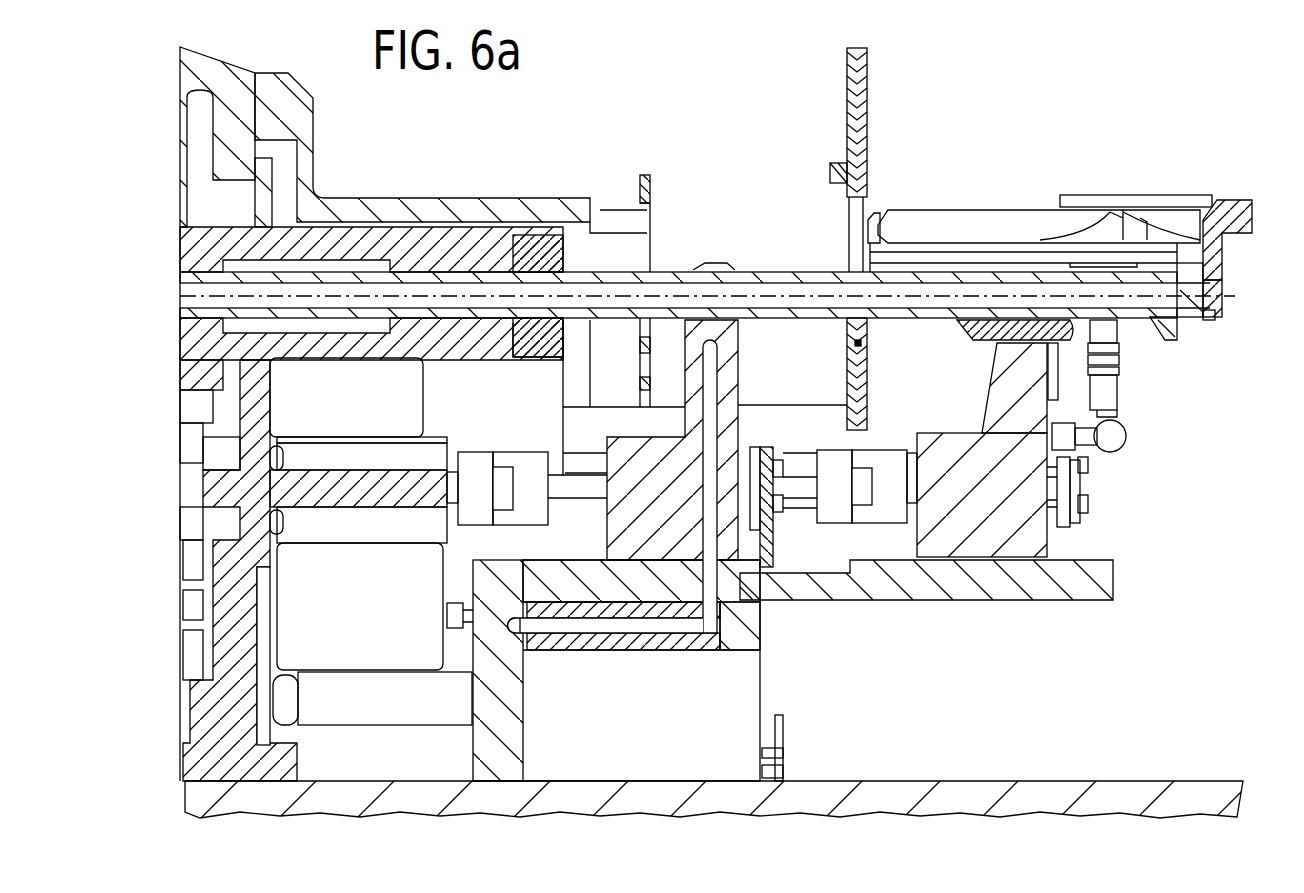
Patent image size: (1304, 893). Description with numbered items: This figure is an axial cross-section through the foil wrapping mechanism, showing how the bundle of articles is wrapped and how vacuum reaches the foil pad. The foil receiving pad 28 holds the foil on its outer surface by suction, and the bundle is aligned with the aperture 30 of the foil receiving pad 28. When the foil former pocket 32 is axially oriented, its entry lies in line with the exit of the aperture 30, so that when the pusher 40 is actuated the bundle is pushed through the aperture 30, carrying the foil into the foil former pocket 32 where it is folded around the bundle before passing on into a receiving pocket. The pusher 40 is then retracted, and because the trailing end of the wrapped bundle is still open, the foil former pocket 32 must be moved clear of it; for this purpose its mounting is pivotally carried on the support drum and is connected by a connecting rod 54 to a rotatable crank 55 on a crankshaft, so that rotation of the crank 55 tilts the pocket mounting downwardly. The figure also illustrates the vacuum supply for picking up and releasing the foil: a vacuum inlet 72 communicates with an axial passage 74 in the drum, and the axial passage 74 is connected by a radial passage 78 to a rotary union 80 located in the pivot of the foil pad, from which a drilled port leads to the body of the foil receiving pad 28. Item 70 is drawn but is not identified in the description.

The foil receiving pad 28 is at (867, 150).
The aperture 30 is at (867, 212).
The foil former pocket 32 is at (980, 227).
The pusher 40 is at (1240, 233).
The connecting rod 54 is at (1112, 390).
The crank 55 is at (1083, 470).
The mounting plate 70 is at (773, 537).
The vacuum inlet 72 is at (510, 630).
The axial passage 74 is at (610, 627).
The radial passage 78 is at (708, 408).
The rotary union 80 is at (715, 262).